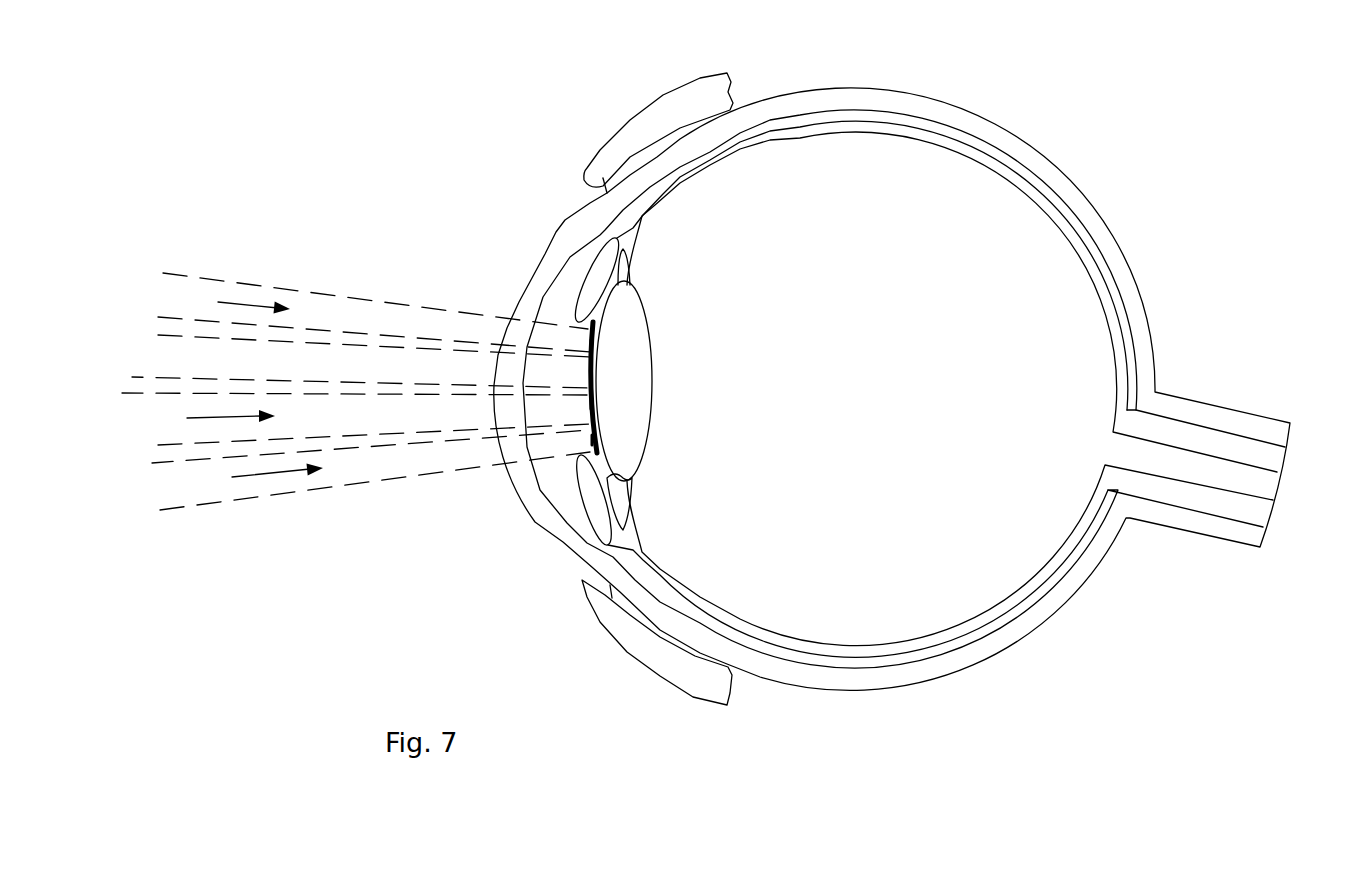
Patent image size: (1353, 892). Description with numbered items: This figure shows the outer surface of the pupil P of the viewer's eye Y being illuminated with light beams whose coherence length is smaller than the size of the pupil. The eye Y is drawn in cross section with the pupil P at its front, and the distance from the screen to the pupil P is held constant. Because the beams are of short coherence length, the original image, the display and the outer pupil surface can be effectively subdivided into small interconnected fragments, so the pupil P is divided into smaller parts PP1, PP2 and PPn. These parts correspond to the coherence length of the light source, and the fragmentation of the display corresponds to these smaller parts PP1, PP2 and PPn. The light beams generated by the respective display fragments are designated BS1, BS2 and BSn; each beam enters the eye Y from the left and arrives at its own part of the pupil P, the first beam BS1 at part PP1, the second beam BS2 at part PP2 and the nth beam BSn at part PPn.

The viewer's eye Y is at (1050, 105).
The pupil P is at (530, 309).
The nth pupil part PPn is at (464, 258).
The second pupil part PP2 is at (446, 501).
The first pupil part PP1 is at (505, 519).
The nth light beam BSn is at (374, 261).
The second light beam BS2 is at (334, 507).
The first light beam BS1 is at (375, 528).